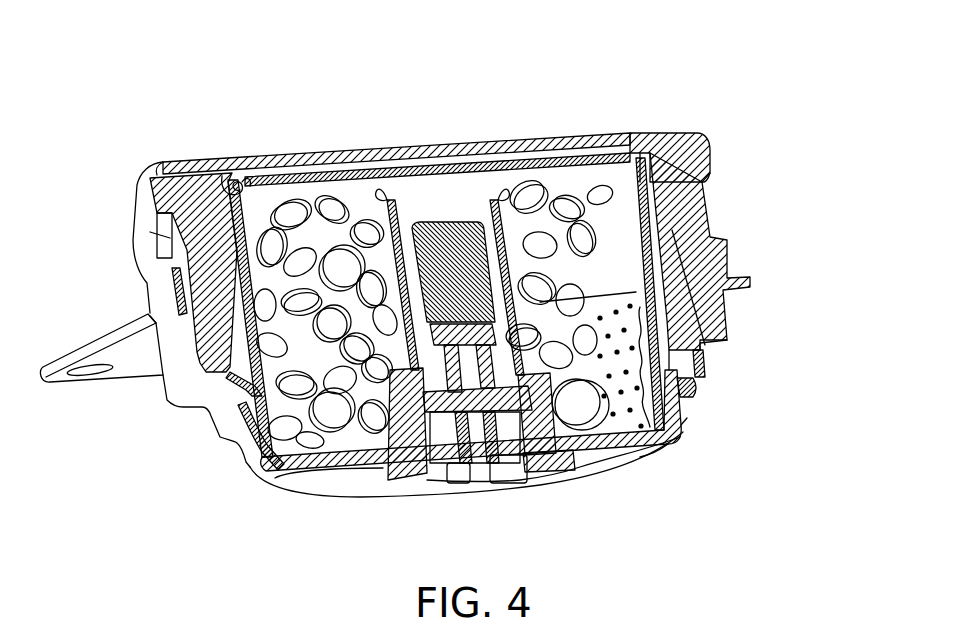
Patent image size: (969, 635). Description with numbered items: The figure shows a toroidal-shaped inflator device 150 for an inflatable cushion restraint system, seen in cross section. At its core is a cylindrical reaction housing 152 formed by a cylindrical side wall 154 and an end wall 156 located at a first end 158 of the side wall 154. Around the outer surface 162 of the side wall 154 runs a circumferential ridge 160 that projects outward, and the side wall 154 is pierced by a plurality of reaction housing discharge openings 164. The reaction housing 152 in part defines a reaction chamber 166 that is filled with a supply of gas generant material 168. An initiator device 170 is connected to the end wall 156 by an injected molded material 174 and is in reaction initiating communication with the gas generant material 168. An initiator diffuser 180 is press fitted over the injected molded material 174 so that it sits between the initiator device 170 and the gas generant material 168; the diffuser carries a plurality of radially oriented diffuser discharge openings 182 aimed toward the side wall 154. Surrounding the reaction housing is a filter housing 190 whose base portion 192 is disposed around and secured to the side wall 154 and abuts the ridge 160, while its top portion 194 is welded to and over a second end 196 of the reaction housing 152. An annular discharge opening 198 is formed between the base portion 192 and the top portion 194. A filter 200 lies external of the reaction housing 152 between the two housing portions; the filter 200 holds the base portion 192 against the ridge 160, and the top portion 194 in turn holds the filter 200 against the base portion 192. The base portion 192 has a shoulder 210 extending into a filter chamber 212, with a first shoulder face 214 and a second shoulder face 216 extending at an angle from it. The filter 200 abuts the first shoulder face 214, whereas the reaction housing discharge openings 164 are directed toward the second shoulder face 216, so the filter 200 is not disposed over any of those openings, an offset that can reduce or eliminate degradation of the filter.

The toroidal-shaped inflator device 150 is at (788, 460).
The cylindrical reaction housing 152 is at (228, 247).
The cylindrical side wall 154 is at (642, 186).
The end wall 156 is at (618, 470).
The first end 158 is at (250, 468).
The circumferential ridge 160 is at (686, 402).
The outer surface 162 is at (688, 421).
The reaction housing discharge openings 164 is at (200, 403).
The reaction chamber 166 is at (610, 232).
The gas generant material 168 is at (327, 223).
The initiator device 170 is at (433, 368).
The injected molded material 174 is at (553, 465).
The initiator diffuser 180 is at (474, 220).
The diffuser discharge openings 182 is at (426, 223).
The filter housing 190 is at (118, 192).
The base portion 192 is at (163, 378).
The top portion 194 is at (593, 134).
The second end 196 is at (229, 182).
The annular discharge opening 198 is at (713, 180).
The filter 200 is at (696, 272).
The shoulder 210 is at (708, 351).
The filter chamber 212 is at (712, 387).
The first shoulder face 214 is at (213, 356).
The second shoulder face 216 is at (712, 371).